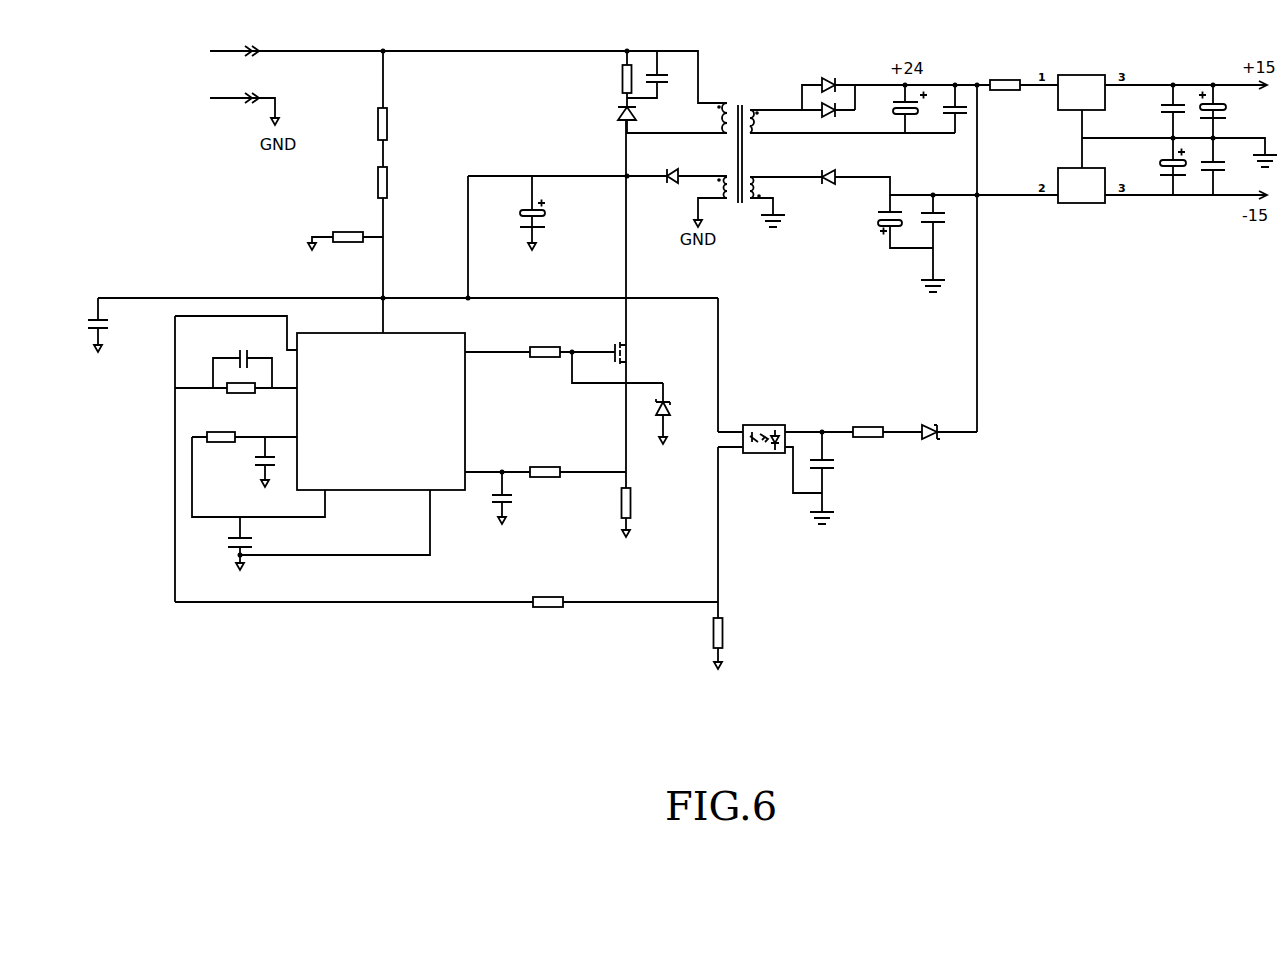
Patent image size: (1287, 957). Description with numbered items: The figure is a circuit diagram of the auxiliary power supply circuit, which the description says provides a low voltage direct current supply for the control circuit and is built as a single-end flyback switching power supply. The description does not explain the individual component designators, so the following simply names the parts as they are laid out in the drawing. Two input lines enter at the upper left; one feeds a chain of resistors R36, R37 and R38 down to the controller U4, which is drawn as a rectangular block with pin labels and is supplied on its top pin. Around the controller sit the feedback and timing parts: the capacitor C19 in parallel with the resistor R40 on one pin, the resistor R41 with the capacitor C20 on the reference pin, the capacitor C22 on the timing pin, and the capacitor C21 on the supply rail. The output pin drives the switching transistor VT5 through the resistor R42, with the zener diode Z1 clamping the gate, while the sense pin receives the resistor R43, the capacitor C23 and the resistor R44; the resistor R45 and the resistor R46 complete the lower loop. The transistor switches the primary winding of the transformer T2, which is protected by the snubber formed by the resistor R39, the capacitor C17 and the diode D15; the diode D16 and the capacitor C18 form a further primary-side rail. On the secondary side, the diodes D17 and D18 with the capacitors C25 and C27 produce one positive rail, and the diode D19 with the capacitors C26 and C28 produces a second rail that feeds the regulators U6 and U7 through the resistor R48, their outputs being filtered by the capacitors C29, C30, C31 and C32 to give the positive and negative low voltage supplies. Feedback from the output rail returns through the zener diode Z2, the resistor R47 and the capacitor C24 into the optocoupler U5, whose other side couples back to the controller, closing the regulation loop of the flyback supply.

The resistor R36 is at (402, 124).
The resistor R37 is at (402, 182).
The resistor R38 is at (338, 243).
The resistor R39 is at (608, 79).
The resistor R40 is at (236, 399).
The resistor R41 is at (258, 462).
The resistor R42 is at (540, 341).
The resistor R43 is at (545, 462).
The resistor R44 is at (612, 514).
The resistor R45 is at (446, 590).
The resistor R46 is at (732, 648).
The resistor R47 is at (886, 420).
The resistor R48 is at (1024, 72).
The capacitor C17 is at (653, 64).
The capacitor C18 is at (547, 225).
The capacitor C19 is at (233, 361).
The capacitor C20 is at (254, 474).
The capacitor C21 is at (84, 338).
The capacitor C22 is at (326, 543).
The capacitor C23 is at (519, 510).
The capacitor C24 is at (840, 477).
The capacitor C25 is at (894, 109).
The capacitor C26 is at (890, 221).
The capacitor C27 is at (942, 110).
The capacitor C28 is at (948, 243).
The capacitor C29 is at (1159, 111).
The capacitor C30 is at (1230, 111).
The capacitor C31 is at (1157, 166).
The capacitor C32 is at (1226, 166).
The diode D15 is at (653, 114).
The diode D16 is at (671, 164).
The diode D17 is at (828, 75).
The diode D18 is at (846, 118).
The diode D19 is at (828, 188).
The transformer T2 is at (739, 140).
The PWM controller UC3843 U4 is at (386, 414).
The optocoupler U5 is at (785, 446).
The voltage regulator U6 is at (1162, 111).
The voltage regulator U7 is at (1081, 200).
The MOSFET transistor VT5 is at (643, 296).
The zener diode Z1 is at (673, 426).
The zener diode Z2 is at (941, 421).